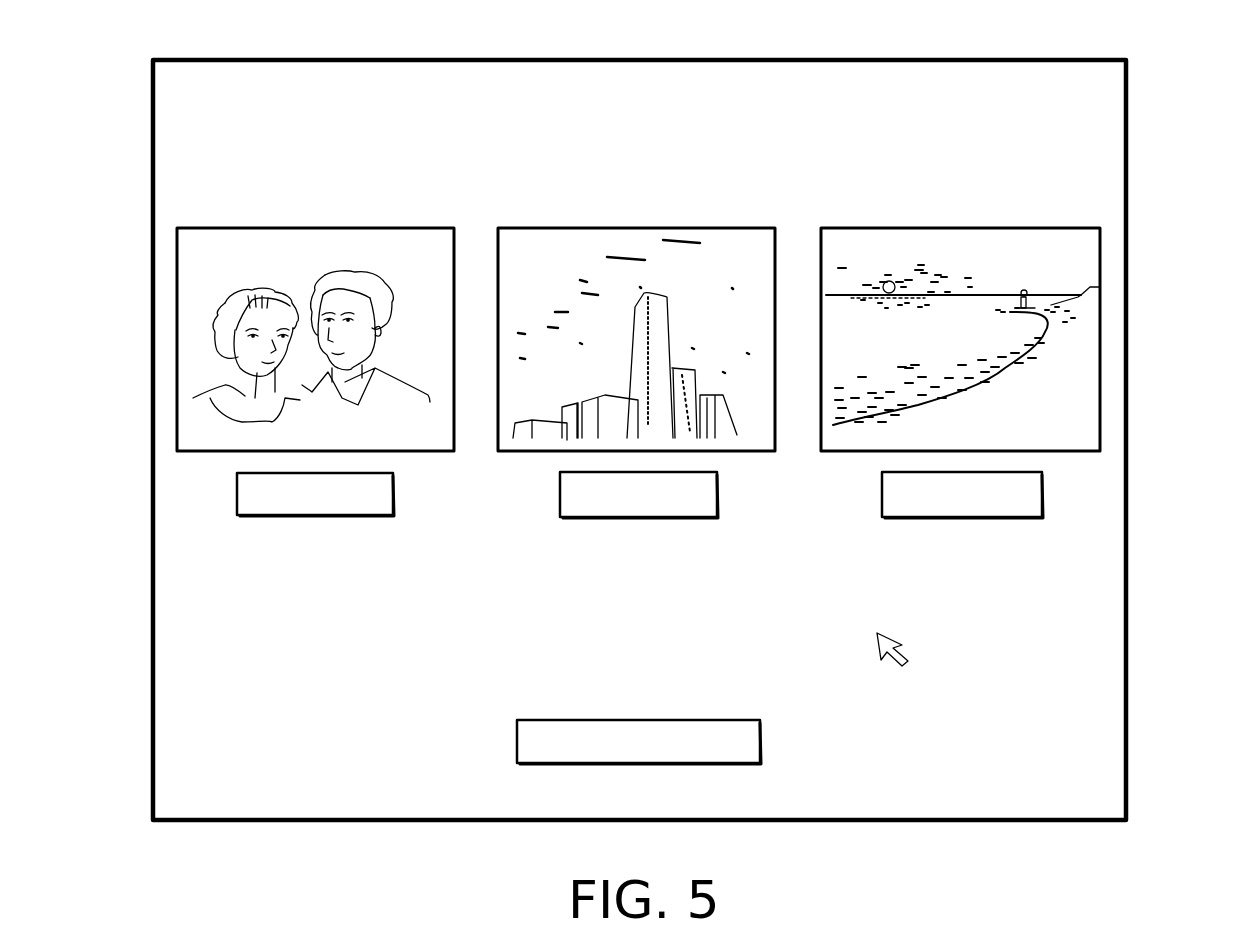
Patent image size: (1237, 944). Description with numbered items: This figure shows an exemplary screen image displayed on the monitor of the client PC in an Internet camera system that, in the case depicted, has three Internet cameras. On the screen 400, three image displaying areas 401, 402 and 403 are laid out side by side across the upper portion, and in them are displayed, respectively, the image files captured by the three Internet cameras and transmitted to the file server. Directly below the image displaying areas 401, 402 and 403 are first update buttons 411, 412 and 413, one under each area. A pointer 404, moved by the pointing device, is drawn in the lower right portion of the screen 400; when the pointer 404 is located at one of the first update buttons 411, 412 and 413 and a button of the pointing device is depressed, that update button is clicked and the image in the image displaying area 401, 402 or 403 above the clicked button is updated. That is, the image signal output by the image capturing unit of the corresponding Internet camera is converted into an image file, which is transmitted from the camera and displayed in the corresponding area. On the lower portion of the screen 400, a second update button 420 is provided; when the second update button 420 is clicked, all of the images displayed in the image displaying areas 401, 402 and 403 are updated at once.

The screen 400 is at (330, 698).
The image displaying area 401 is at (322, 227).
The image displaying area 402 is at (645, 228).
The image displaying area 403 is at (967, 228).
The pointer 404 is at (893, 659).
The first update button 411 is at (272, 517).
The first update button 412 is at (598, 517).
The first update button 413 is at (1010, 517).
The second update button 420 is at (718, 765).